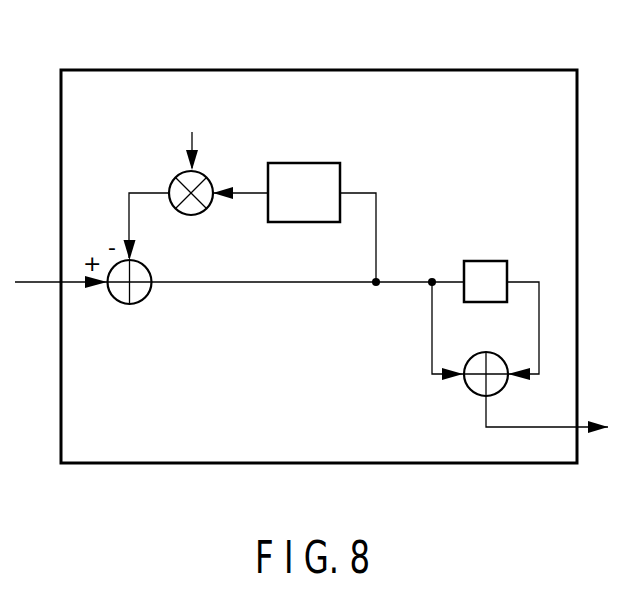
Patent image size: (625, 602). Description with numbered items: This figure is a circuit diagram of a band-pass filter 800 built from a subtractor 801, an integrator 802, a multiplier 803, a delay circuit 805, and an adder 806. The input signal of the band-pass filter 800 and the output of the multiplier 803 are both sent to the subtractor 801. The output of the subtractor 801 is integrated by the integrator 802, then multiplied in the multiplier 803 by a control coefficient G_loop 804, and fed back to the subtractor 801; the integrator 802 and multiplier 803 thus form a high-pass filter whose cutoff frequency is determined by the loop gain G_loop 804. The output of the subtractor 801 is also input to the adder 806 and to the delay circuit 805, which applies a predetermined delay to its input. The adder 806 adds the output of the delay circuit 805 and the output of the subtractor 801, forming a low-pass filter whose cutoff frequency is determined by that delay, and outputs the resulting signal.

The band-pass filter 800 is at (437, 70).
The subtractor 801 is at (152, 273).
The integrator 802 is at (305, 163).
The multiplier 803 is at (213, 180).
The control coefficient G_loop 804 is at (193, 100).
The delay circuit 805 is at (485, 261).
The adder 806 is at (497, 354).